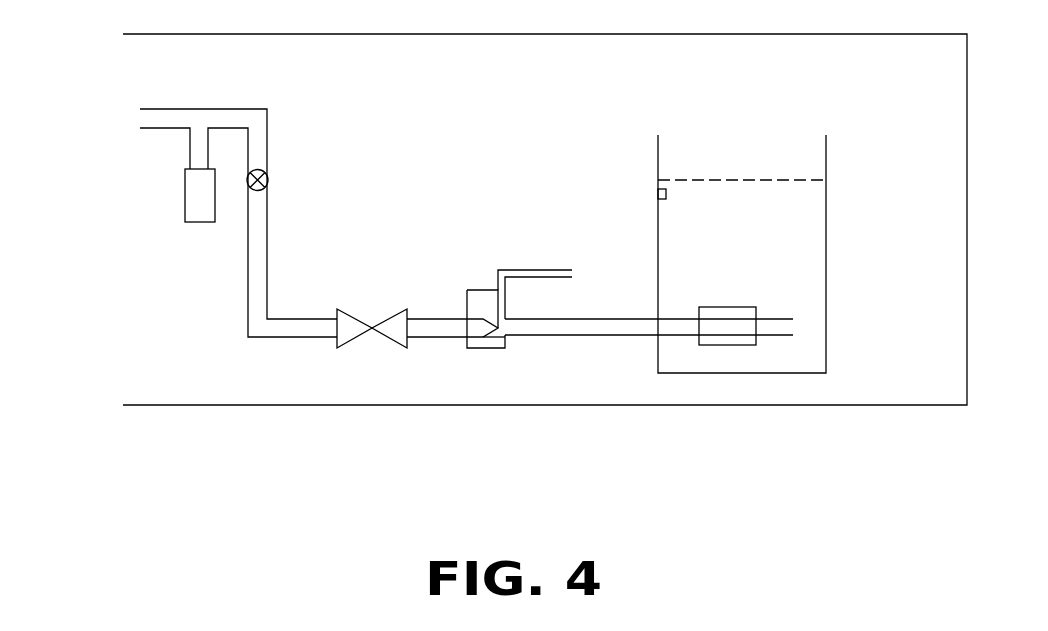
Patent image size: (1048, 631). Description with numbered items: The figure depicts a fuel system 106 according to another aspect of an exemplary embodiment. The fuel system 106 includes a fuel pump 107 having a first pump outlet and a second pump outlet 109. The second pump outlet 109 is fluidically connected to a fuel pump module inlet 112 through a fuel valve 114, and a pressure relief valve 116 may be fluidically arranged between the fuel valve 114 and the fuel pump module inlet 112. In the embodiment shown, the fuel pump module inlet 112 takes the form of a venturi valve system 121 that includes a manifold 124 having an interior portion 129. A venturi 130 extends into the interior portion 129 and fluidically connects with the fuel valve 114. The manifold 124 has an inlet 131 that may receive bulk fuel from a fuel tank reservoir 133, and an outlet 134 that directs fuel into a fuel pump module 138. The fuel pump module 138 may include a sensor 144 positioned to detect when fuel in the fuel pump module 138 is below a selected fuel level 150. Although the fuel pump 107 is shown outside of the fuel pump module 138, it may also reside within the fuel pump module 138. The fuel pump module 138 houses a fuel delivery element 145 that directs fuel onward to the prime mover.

The fuel system 106 is at (360, 153).
The fuel pump 107 is at (190, 202).
The second pump outlet 109 is at (227, 117).
The fuel pump module inlet 112 is at (500, 360).
The fuel valve 114 is at (268, 181).
The pressure relief valve 116 is at (367, 350).
The venturi valve system 121 is at (478, 288).
The manifold 124 is at (466, 300).
The interior portion 129 is at (503, 335).
The venturi 130 is at (480, 327).
The inlet 131 is at (538, 270).
The fuel tank reservoir 133 is at (943, 400).
The outlet 134 is at (560, 320).
The fuel pump module 138 is at (830, 238).
The sensor 144 is at (658, 192).
The fuel delivery element 145 is at (781, 320).
The selected fuel level 150 is at (720, 180).